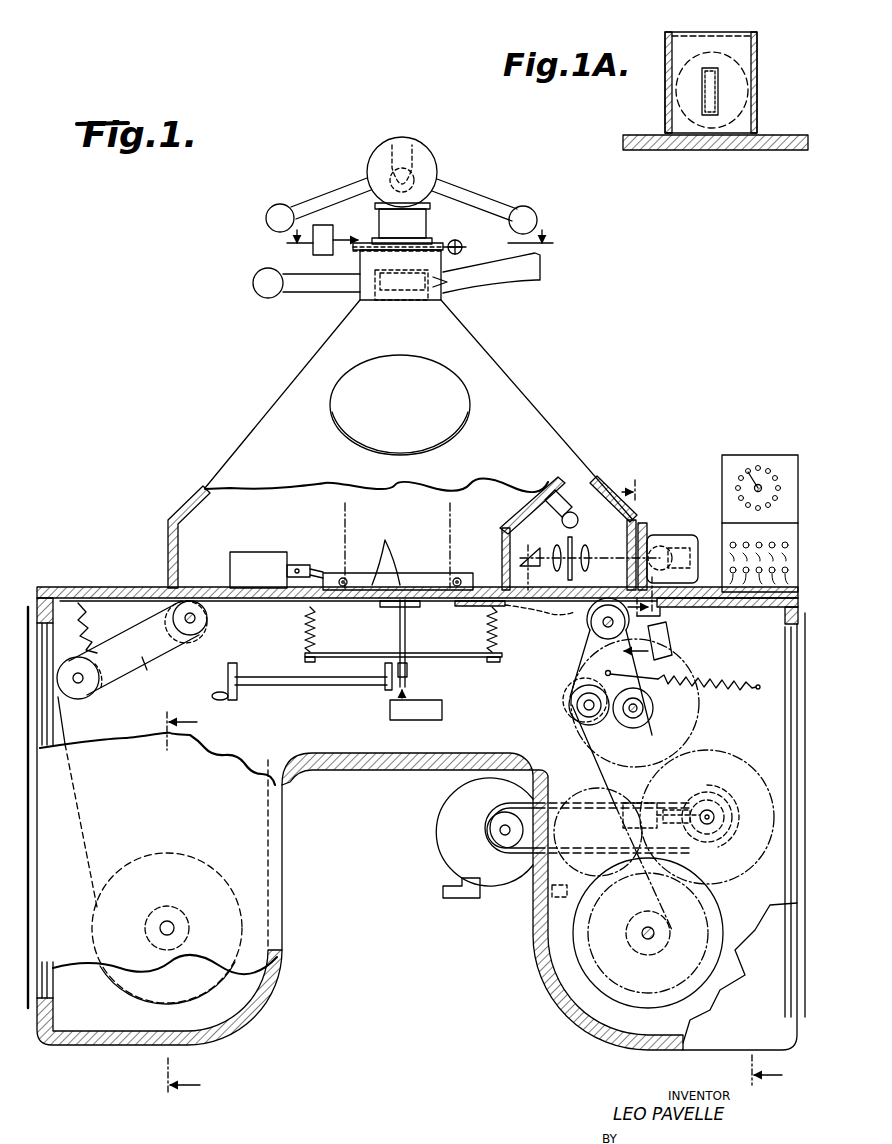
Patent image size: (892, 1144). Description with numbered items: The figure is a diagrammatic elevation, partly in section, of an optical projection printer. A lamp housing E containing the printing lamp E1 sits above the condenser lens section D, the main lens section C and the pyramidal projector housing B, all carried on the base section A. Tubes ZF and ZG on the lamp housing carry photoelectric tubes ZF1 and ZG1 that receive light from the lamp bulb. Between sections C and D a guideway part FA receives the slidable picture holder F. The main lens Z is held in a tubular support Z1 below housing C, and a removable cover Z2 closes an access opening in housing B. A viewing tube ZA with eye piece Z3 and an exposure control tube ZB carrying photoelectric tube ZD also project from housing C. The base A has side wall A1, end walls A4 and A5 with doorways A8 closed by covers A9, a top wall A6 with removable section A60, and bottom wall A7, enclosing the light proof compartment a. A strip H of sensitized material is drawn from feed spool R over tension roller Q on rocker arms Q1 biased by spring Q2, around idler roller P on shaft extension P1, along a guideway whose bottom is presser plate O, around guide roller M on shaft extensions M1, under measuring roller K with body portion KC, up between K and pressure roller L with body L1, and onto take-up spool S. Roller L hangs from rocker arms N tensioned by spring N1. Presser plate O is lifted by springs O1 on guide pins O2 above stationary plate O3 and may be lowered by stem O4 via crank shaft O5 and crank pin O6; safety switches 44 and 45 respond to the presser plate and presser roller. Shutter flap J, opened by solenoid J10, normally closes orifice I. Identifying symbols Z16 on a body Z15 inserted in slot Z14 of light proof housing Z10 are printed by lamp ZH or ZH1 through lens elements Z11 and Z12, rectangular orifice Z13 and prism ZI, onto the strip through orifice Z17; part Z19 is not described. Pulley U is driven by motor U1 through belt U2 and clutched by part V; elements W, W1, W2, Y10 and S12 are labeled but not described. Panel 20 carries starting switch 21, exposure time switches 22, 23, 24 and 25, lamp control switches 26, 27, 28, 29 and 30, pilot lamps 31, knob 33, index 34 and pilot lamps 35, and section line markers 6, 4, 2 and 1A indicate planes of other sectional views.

In FIG. 1, the lamp housing E is at (405, 138).
In FIG. 1, the printing lamp E1 is at (418, 168).
In FIG. 1, the condenser lens section D is at (408, 231).
In FIG. 1, the tube ZG is at (336, 192).
In FIG. 1, the photoelectric tube ZG1 is at (266, 218).
In FIG. 1, the tube ZF is at (468, 188).
In FIG. 1, the photoelectric tube ZF1 is at (532, 208).
In FIG. 1, the photoelectric tube ZD is at (256, 276).
In FIG. 1, the exposure control tube ZB is at (306, 292).
In FIG. 1, the main lens Z is at (398, 296).
In FIG. 1, the tubular support Z1 is at (376, 282).
In FIG. 1, the viewing tube ZA is at (534, 282).
In FIG. 1, the eye piece Z3 is at (540, 262).
In FIG. 1, the picture holder F is at (350, 243).
In FIG. 1, the guideway part FA is at (362, 252).
In FIG. 1, the main lens section C is at (463, 252).
In FIG. 1, the section line 6 is at (423, 245).
In FIG. 1, the projector housing B is at (520, 393).
In FIG. 1, the removable cover Z2 is at (410, 416).
In FIG. 1, the top wall A6 is at (135, 588).
In FIG. 1, the removable top wall section A60 is at (197, 588).
In FIG. 1, the end wall A5 is at (48, 598).
In FIG. 1, the door or cover part A9 is at (29, 608).
In FIG. 1, the doorway A8 is at (72, 600).
In FIG. 1, the exposure time regulation switch 22 is at (428, 597).
In FIG. 1, the starting switch 21 is at (798, 618).
In FIG. 1, the bottom wall A7 is at (222, 1038).
In FIG. 1, the base section A is at (132, 1050).
In FIG. 1, the end wall A4 is at (780, 618).
In FIG. 1, the side wall A1 is at (728, 1018).
In FIG. 1, the strip of sensitized material H is at (64, 744).
In FIG. 1, the feed spool R is at (230, 977).
In FIG. 1, the section line 4 is at (187, 914).
In FIG. 1, the light proof compartment a is at (263, 737).
In FIG. 1, the tension roller Q is at (90, 694).
In FIG. 1, the guide roller P is at (200, 640).
In FIG. 1, the rocker arms Q1 is at (146, 668).
In FIG. 1, the axle shaft extension P1 is at (190, 628).
In FIG. 1, the spring Q2 is at (88, 618).
In FIG. 1, the solenoid J10 is at (260, 565).
In FIG. 1, the shutter flap J is at (340, 505).
In FIG. 1, the orifice I is at (428, 580).
In FIG. 1, the presser plate O is at (272, 612).
In FIG. 1, the springs O1 is at (308, 638).
In FIG. 1, the vertical guide pins O2 is at (306, 650).
In FIG. 1, the stationary horizontal plate O3 is at (336, 662).
In FIG. 1, the vertical stem O4 is at (398, 648).
In FIG. 1, the crank shaft O5 is at (312, 684).
In FIG. 1, the crank pin O6 is at (408, 670).
In FIG. 1, the safety switch 44 is at (398, 708).
In FIG. 1, the orifice Z17 is at (517, 607).
In FIG. 1, the right angle prism ZI is at (512, 525).
In FIG. 1, the light proof housing Z10 is at (556, 482).
In FIG. 1, the light source ZH1 is at (566, 500).
In FIG. 1A, the rectangular orifice Z13 is at (718, 108).
In FIG. 1, the rectangular orifice Z13 is at (578, 512).
In FIG. 1, the lens element Z11 is at (548, 560).
In FIG. 1, the lens element Z12 is at (590, 548).
In FIG. 1A, the symbol body Z15 is at (740, 33).
In FIG. 1, the symbol body Z15 is at (641, 522).
In FIG. 1, the panel Z19 is at (646, 522).
In FIG. 1A, the transverse slot Z14 is at (745, 46).
In FIG. 1, the transverse slot Z14 is at (650, 535).
In FIG. 1, the light source ZH is at (684, 540).
In FIG. 1, the section line 1A is at (636, 553).
In FIG. 1, the section line 2 is at (724, 829).
In FIG. 1, the panel 20 is at (793, 455).
In FIG. 1, the pointer 34 is at (756, 485).
In FIG. 1, the pilot lamp 35 is at (768, 470).
In FIG. 1, the knob 33 is at (776, 486).
In FIG. 1, the printing lamp control switch 28 is at (788, 540).
In FIG. 1, the printing lamp control switch 27 is at (788, 548).
In FIG. 1, the printing lamp control switch 26 is at (786, 557).
In FIG. 1, the pilot lamp 31 is at (772, 540).
In FIG. 1, the printing lamp control switch 30 is at (733, 542).
In FIG. 1, the printing lamp control switch 29 is at (730, 546).
In FIG. 1, the exposure time regulation switch 23 is at (788, 586).
In FIG. 1, the exposure time regulation switch 25 is at (708, 604).
In FIG. 1, the exposure time regulation switch 24 is at (740, 612).
In FIG. 1, the guide roller M is at (602, 622).
In FIG. 1, the axle shaft extensions M1 is at (600, 640).
In FIG. 1, the pressure roller L is at (572, 714).
In FIG. 1, the body portion L1 is at (570, 704).
In FIG. 1, the body portion KC is at (640, 726).
In FIG. 1, the measuring roller K is at (624, 728).
In FIG. 1, the rocker arms N is at (580, 682).
In FIG. 1, the spring N1 is at (716, 692).
In FIG. 1, the safety switch 45 is at (659, 641).
In FIG. 1, the wheel W1 is at (700, 718).
In FIG. 1, the drive wheel W is at (760, 736).
In FIG. 1, the clutch part V is at (716, 800).
In FIG. 1, the coupling Y10 is at (626, 842).
In FIG. 1, the pulley U is at (732, 846).
In FIG. 1, the driving motor U1 is at (438, 838).
In FIG. 1, the belt U2 is at (518, 852).
In FIG. 1, the take-up spool S is at (582, 970).
In FIG. 1, the reel flange W2 is at (590, 925).
In FIG. 1, the reel hub S12 is at (645, 940).
In FIG. 1A, the identifying symbol Z16 is at (715, 85).